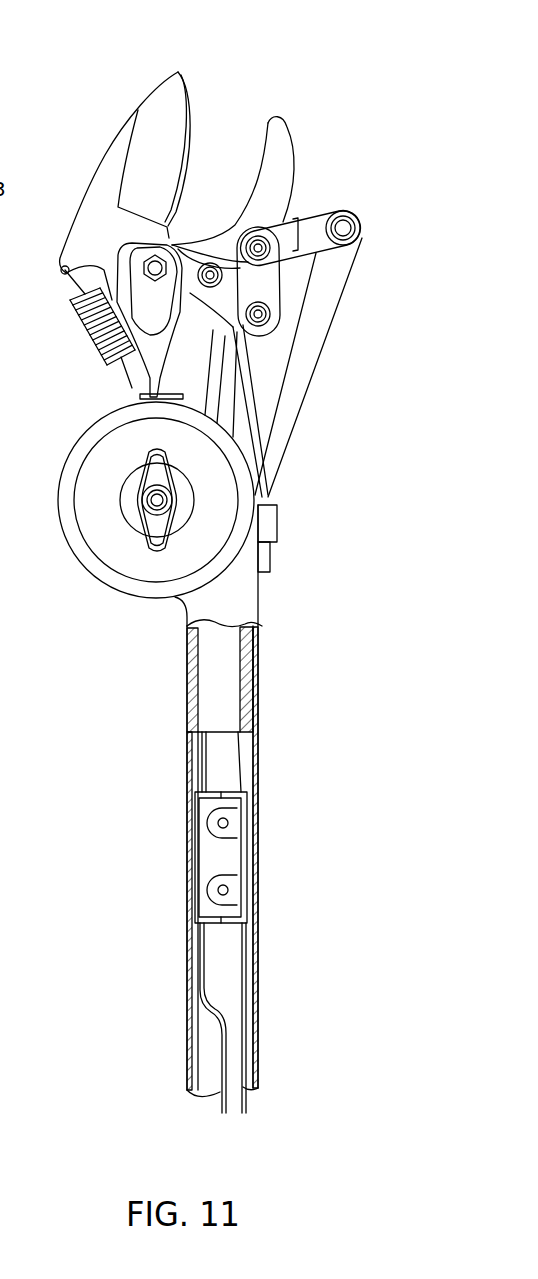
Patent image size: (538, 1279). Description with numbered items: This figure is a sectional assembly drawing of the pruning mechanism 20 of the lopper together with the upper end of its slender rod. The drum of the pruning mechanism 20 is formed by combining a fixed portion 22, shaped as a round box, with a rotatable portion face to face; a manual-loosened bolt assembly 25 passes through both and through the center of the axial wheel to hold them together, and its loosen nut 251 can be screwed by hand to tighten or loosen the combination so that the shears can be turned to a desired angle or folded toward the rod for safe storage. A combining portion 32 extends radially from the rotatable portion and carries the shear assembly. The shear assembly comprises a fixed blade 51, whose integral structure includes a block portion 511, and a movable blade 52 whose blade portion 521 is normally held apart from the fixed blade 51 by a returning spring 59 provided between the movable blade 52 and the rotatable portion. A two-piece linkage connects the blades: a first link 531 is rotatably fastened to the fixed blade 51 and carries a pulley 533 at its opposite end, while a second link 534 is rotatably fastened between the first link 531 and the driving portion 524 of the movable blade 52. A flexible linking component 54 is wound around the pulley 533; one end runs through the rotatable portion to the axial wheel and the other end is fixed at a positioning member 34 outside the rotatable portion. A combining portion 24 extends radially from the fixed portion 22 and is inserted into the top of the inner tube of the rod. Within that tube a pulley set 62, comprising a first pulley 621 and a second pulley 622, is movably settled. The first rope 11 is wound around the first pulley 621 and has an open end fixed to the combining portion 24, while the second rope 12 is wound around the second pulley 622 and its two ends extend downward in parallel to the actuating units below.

The pruning mechanism 20 is at (147, 70).
The movable blade 52 is at (107, 147).
The blade portion 521 is at (191, 108).
The fixed blade 51 is at (290, 136).
The block portion 511 is at (262, 186).
The first link 531 is at (296, 218).
The pulley 533 is at (364, 228).
The second link 534 is at (268, 280).
The flexible linking component 54 is at (320, 348).
The driving portion 524 is at (236, 332).
The returning spring 59 is at (88, 347).
The combining portion 32 is at (135, 390).
The fixed portion 22 is at (90, 467).
The manual-loosened bolt assembly 25 is at (150, 499).
The loosen nut 251 is at (150, 535).
The positioning member 34 is at (280, 527).
The combining portion 24 is at (262, 630).
The first rope 11 is at (235, 749).
The pulley set 62 is at (229, 940).
The first pulley 621 is at (218, 823).
The second pulley 622 is at (218, 890).
The second rope 12 is at (246, 1116).